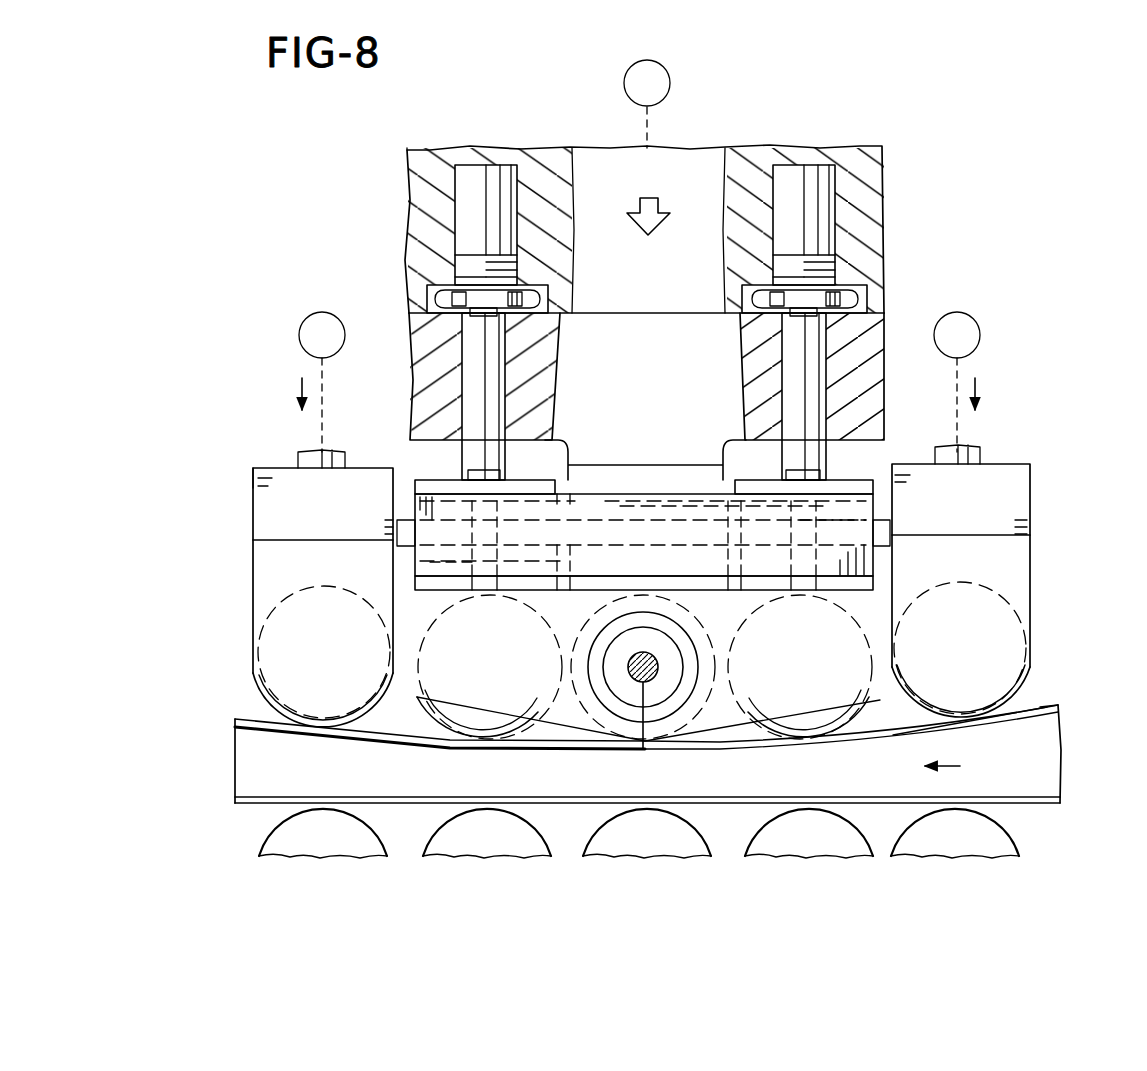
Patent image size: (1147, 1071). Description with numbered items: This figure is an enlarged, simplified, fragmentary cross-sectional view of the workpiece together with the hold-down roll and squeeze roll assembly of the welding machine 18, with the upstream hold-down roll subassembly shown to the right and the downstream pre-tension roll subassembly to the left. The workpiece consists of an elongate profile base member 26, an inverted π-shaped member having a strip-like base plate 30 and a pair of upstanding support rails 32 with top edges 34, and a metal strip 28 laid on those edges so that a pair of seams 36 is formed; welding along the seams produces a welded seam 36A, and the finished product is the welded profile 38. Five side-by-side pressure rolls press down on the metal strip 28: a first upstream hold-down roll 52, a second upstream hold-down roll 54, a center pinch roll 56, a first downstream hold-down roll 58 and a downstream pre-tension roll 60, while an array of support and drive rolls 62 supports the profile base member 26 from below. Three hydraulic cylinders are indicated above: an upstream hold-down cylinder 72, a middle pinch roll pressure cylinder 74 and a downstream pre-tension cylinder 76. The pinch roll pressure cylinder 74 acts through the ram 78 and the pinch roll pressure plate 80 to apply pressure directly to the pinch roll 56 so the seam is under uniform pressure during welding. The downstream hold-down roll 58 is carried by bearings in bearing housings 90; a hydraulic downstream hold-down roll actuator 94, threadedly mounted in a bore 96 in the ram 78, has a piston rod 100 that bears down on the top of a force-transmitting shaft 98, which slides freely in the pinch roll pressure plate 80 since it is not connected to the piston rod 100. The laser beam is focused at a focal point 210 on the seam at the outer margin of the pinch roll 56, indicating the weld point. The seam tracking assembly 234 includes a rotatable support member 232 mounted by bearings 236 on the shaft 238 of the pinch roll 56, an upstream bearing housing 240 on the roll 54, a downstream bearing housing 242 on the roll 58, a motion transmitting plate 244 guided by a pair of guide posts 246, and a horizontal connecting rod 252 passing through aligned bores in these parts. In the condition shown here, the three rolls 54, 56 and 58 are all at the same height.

The welding machine 18 is at (893, 180).
The profile base member 26 is at (1050, 790).
The metal strip 28 is at (1047, 706).
The base plate 30 is at (1052, 805).
The support rails 32 is at (1052, 733).
The top edges 34 is at (894, 738).
The seams 36 is at (800, 742).
The welded seam 36A is at (462, 744).
The welded profile 38 is at (246, 753).
The first upstream hold-down roll 52 is at (1032, 606).
The second upstream hold-down roll 54 is at (960, 633).
The center pinch roll 56 is at (715, 645).
The first downstream hold-down roll 58 is at (540, 598).
The downstream pre-tension roll 60 is at (268, 603).
The support and drive rolls 62 is at (365, 850).
The upstream hold-down cylinder 72 is at (981, 336).
The pinch roll pressure cylinder 74 is at (622, 84).
The downstream pre-tension cylinder 76 is at (298, 336).
The ram 78 is at (706, 152).
The pinch roll pressure plate 80 is at (647, 304).
The bearing housings 90 is at (555, 478).
The downstream hold-down roll actuator 94 is at (470, 175).
The bore 96 is at (458, 262).
The force-transmitting shaft 98 is at (466, 390).
The piston rod 100 is at (470, 340).
The focal point 210 is at (650, 752).
The rotatable support member 232 is at (410, 624).
The seam tracking assembly 234 is at (636, 490).
The bearings 236 is at (682, 630).
The shaft 238 is at (655, 665).
The upstream bearing housing 240 is at (840, 490).
The downstream bearing housing 242 is at (430, 478).
The motion transmitting plate 244 is at (410, 503).
The guide posts 246 is at (412, 565).
The connecting rod 252 is at (688, 500).